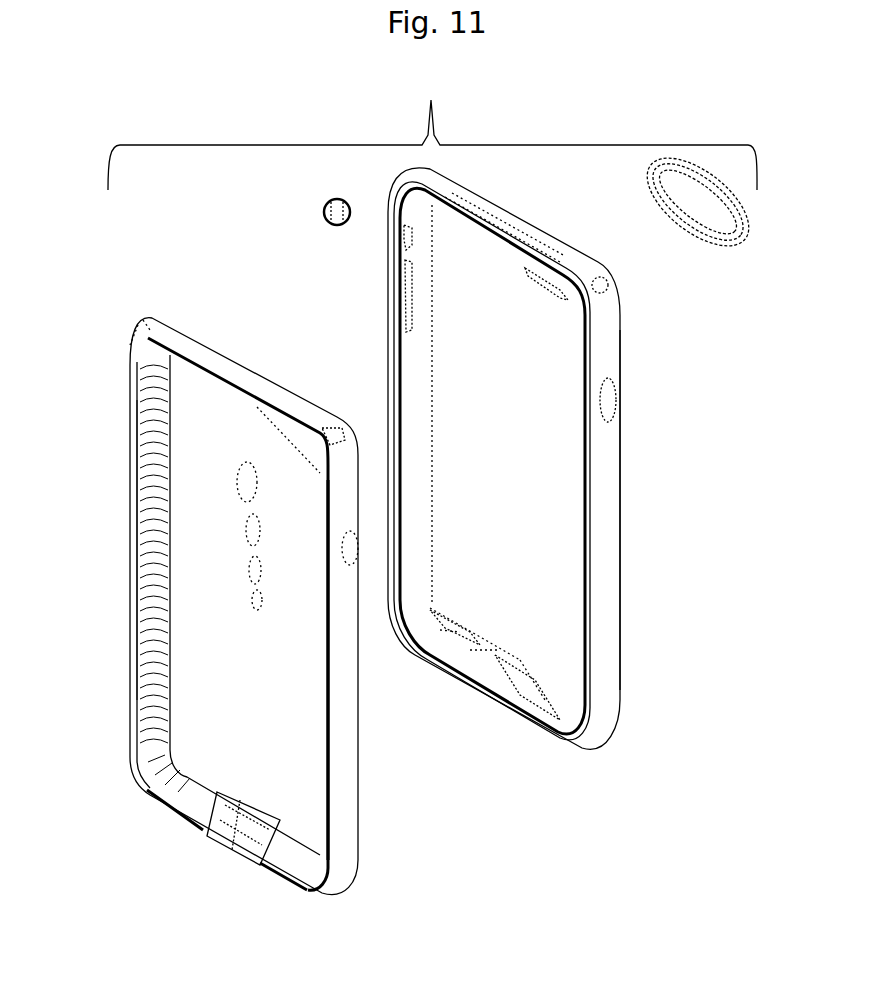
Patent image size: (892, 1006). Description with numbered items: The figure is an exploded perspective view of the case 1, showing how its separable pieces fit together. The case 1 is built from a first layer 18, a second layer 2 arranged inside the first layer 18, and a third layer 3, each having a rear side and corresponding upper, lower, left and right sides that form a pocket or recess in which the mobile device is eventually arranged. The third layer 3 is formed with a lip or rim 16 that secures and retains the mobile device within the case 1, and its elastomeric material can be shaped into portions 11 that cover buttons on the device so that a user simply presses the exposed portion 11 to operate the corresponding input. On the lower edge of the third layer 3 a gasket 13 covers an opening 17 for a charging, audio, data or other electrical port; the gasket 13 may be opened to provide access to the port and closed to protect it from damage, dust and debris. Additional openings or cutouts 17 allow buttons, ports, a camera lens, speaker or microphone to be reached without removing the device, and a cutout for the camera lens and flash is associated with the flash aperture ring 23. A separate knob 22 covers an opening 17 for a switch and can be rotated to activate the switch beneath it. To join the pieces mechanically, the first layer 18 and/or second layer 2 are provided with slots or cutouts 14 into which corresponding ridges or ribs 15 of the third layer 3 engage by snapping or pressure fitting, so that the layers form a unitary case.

The case 1 is at (432, 130).
The second layer 2 is at (402, 463).
The third layer 3 is at (396, 853).
The portions 11 is at (147, 457).
The gasket 13 is at (262, 833).
The slots or cutouts 14 is at (605, 282).
The ridges or ribs 15 is at (342, 424).
The lip or rim 16 is at (326, 705).
The openings or cutouts 17 is at (408, 235).
The first layer 18 is at (606, 565).
The knob 22 is at (321, 210).
The flash aperture ring 23 is at (711, 246).